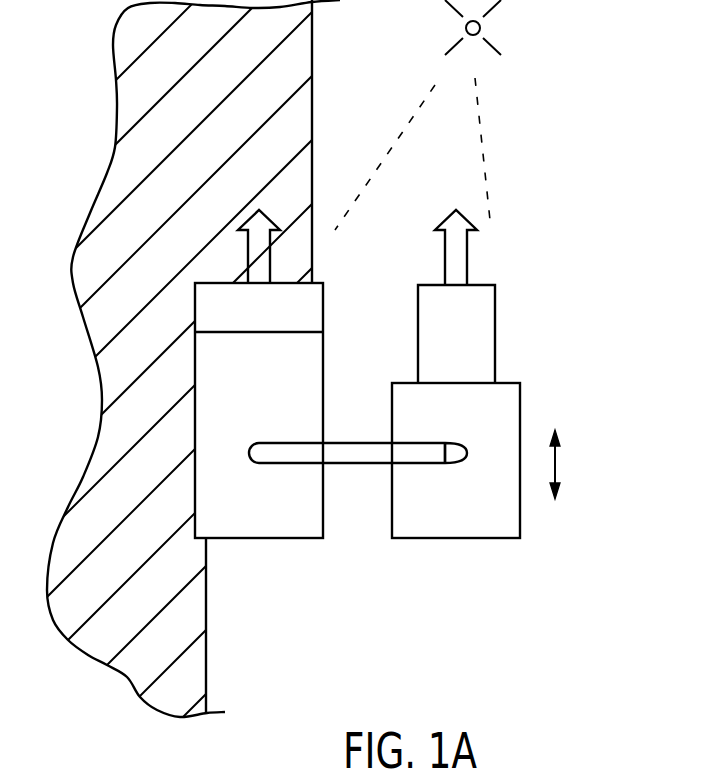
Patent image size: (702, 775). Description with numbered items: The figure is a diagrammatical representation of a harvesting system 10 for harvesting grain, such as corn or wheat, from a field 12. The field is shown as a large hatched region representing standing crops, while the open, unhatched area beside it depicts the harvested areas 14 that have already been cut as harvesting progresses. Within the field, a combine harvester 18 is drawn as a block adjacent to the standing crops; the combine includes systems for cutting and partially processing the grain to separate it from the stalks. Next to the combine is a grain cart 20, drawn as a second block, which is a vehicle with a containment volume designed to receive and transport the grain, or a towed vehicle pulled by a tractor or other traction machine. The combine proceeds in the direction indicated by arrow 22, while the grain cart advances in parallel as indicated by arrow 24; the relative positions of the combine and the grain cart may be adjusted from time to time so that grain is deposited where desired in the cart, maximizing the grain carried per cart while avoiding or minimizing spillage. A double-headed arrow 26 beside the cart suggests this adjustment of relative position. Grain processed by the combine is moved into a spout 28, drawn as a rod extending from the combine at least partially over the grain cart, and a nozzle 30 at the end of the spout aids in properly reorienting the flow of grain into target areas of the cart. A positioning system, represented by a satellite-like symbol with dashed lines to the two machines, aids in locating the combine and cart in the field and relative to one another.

The harvesting system 10 is at (528, 176).
The field 12 is at (351, 387).
The harvested areas 14 is at (363, 97).
The combine harvester 18 is at (262, 520).
The grain cart 20 is at (455, 515).
The arrow 22 is at (271, 248).
The arrow 24 is at (467, 250).
The vertical movement direction 26 is at (557, 465).
The spout 28 is at (358, 442).
The nozzle 30 is at (468, 455).